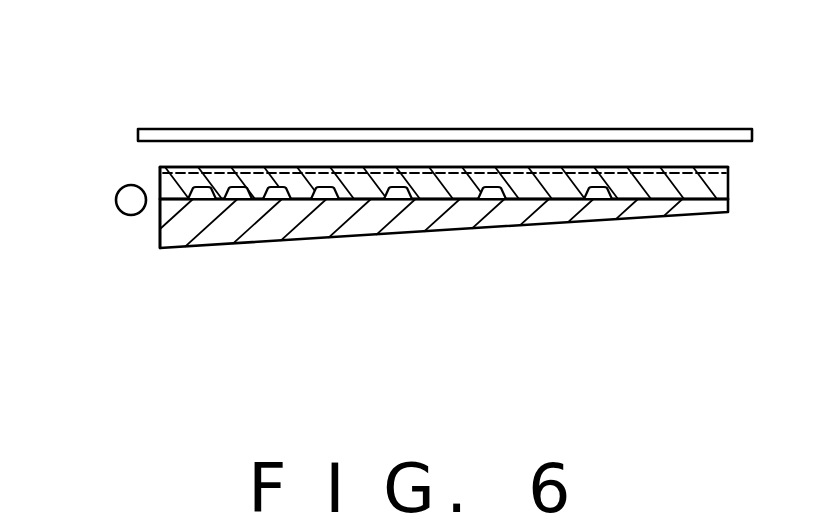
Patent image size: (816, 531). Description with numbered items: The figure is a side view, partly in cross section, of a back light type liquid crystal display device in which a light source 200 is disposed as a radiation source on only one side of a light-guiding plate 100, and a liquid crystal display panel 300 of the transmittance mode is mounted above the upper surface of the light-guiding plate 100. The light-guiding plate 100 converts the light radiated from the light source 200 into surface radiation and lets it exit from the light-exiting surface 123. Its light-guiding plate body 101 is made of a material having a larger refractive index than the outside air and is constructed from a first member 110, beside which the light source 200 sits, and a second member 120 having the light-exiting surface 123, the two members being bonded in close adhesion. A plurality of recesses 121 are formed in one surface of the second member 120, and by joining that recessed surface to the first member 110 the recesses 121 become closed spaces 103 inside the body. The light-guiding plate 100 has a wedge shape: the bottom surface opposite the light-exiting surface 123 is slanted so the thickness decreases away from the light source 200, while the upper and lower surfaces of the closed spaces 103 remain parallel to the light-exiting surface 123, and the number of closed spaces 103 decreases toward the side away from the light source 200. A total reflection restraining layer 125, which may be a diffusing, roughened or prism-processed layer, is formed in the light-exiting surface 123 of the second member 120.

The light-guiding plate 100 is at (374, 194).
The light-guiding plate body 101 is at (163, 248).
The closed spaces 103 is at (265, 200).
The first member 110 is at (157, 177).
The second member 120 is at (185, 243).
The recesses 121 is at (322, 200).
The light-exiting surface 123 is at (342, 168).
The total reflection restraining layer 125 is at (508, 168).
The light source 200 is at (127, 200).
The liquid crystal display panel 300 is at (195, 135).